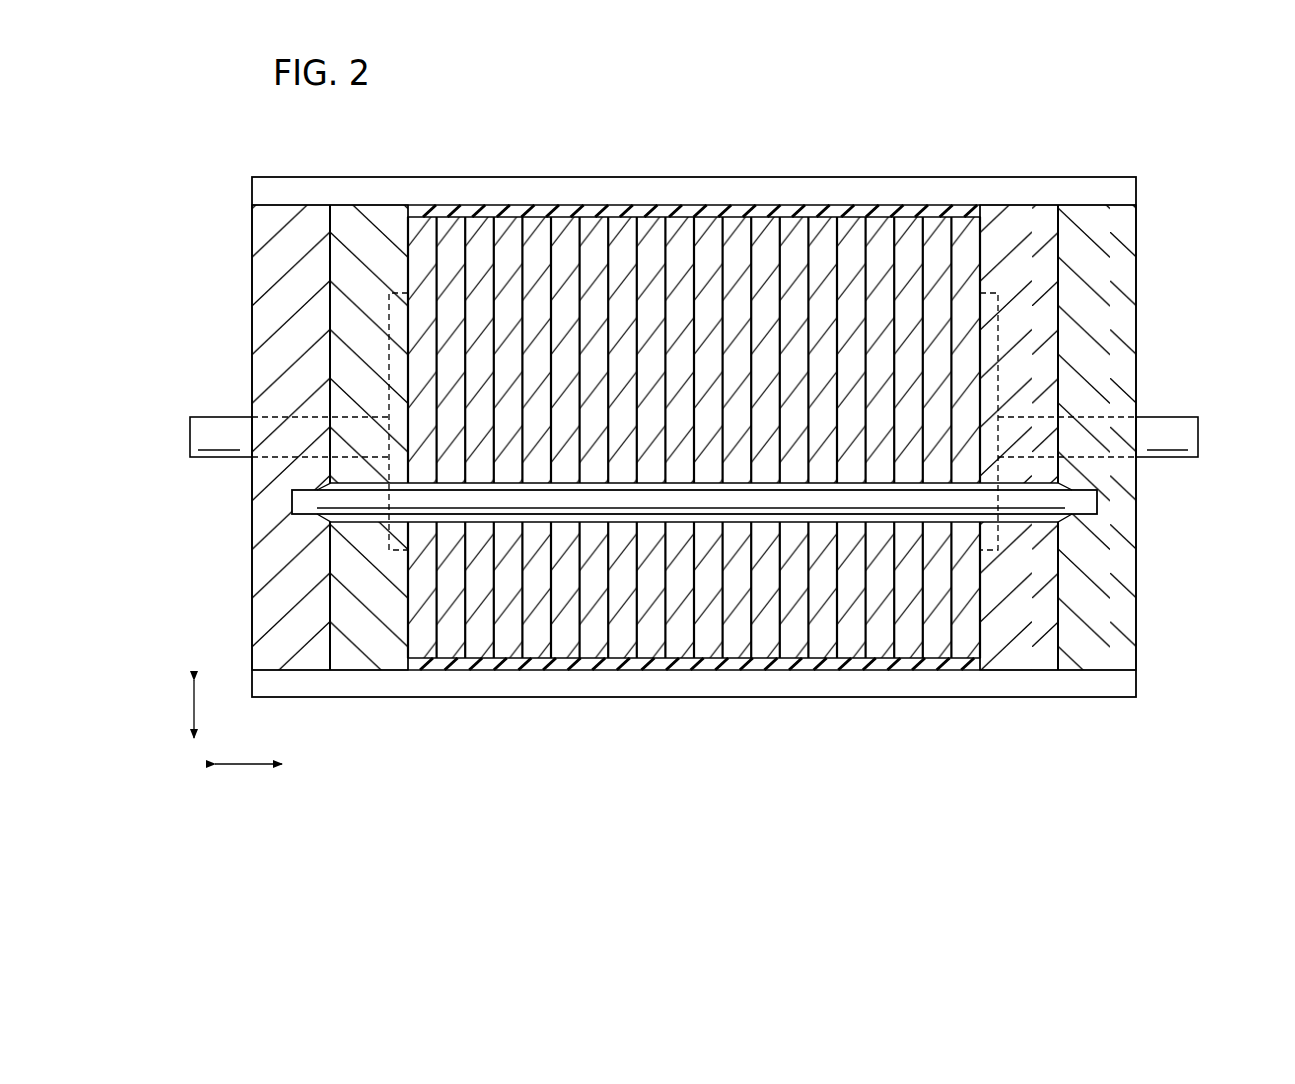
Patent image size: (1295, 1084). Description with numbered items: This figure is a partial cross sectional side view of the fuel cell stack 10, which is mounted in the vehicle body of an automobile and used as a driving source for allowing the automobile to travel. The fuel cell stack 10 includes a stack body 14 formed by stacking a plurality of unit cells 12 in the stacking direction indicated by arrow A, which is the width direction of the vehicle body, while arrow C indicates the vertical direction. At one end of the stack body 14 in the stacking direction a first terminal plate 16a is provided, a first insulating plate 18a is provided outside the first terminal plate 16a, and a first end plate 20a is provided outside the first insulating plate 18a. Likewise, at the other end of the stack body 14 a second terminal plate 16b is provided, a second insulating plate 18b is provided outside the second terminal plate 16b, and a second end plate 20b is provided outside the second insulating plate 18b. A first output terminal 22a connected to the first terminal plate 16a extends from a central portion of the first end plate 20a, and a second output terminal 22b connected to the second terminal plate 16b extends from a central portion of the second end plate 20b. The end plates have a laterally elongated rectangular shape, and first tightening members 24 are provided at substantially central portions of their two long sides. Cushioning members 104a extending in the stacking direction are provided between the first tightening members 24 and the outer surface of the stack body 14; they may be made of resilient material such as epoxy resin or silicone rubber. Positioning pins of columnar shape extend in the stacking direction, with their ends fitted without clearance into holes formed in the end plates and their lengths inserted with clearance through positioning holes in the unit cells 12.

The fuel cell stack 10 is at (449, 127).
The unit cell 12 is at (747, 129).
The stack body 14 is at (694, 373).
The first terminal plate 16a is at (398, 323).
The second terminal plate 16b is at (998, 373).
The first insulating plate 18a is at (372, 222).
The second insulating plate 18b is at (1040, 264).
The first end plate 20a is at (295, 400).
The second end plate 20b is at (1095, 437).
The first output terminal 22a is at (212, 428).
The second output terminal 22b is at (1185, 438).
The first tightening member 24 is at (808, 175).
The cushioning member 104a is at (928, 213).